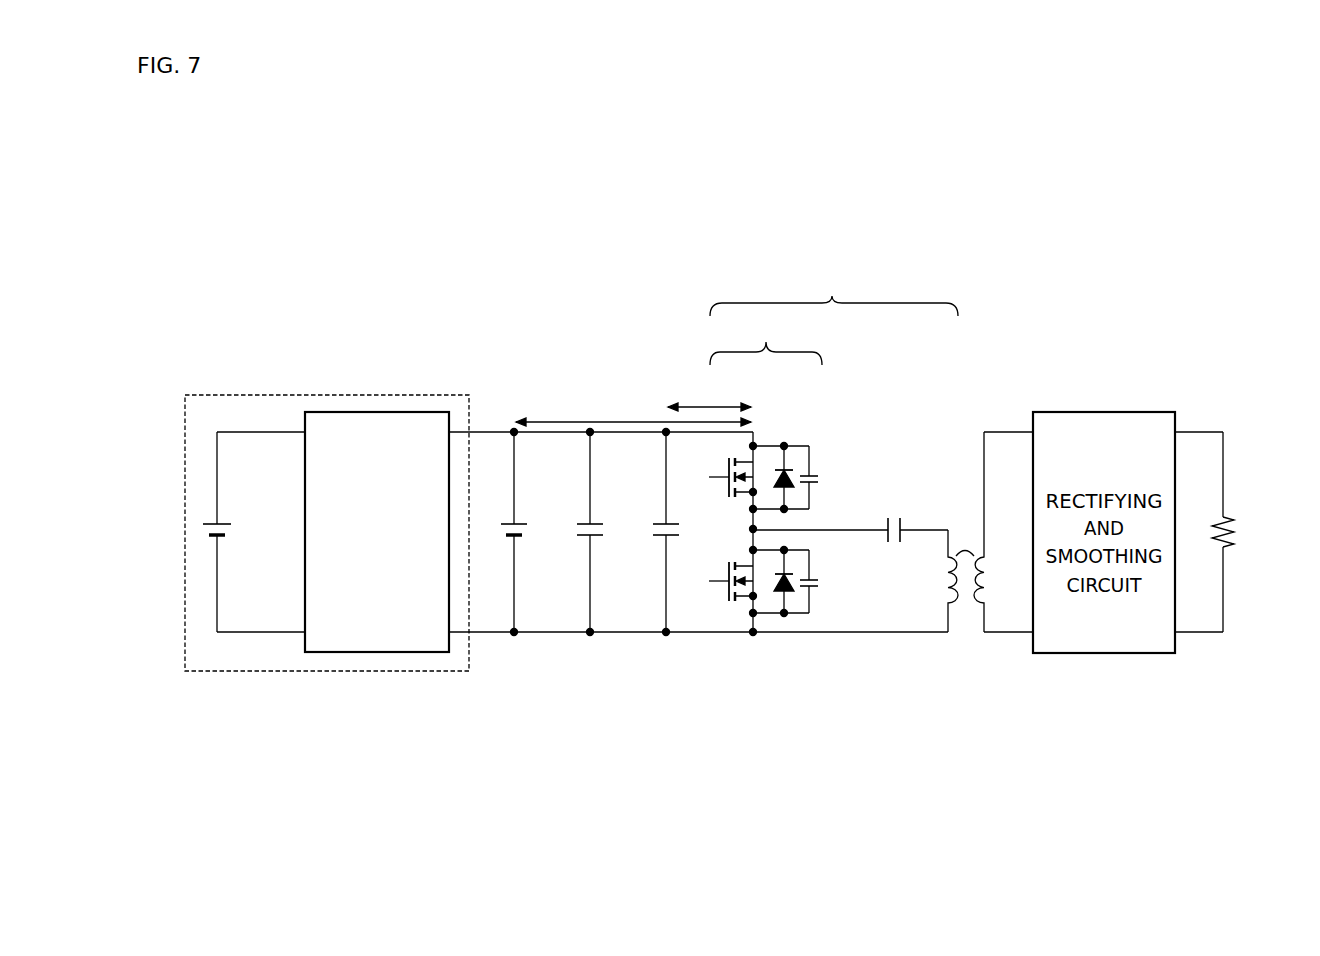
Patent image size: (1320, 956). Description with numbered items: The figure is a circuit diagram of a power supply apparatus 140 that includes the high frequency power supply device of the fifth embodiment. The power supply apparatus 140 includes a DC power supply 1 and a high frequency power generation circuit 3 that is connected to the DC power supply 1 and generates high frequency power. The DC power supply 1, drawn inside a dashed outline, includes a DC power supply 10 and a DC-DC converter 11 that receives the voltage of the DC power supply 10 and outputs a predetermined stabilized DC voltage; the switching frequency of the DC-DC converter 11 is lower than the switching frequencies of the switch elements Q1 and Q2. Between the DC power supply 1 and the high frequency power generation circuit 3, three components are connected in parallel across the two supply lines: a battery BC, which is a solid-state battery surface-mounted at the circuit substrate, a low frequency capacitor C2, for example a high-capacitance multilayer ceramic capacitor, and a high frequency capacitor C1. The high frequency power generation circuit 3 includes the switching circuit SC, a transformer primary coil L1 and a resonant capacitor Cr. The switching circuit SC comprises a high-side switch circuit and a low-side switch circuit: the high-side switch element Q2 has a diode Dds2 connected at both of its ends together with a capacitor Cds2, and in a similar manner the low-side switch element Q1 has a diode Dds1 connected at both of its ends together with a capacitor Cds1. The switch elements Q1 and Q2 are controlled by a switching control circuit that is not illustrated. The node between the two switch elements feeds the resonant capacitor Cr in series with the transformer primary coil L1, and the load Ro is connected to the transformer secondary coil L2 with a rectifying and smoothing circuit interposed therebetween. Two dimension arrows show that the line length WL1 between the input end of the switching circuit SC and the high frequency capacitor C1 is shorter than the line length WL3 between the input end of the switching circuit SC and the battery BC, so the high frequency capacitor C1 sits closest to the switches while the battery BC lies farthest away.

The power supply apparatus 140 is at (268, 285).
The DC power supply 1 is at (312, 395).
The DC power supply 10 is at (196, 523).
The DC-DC converter 11 is at (377, 412).
The high frequency power generation circuit 3 is at (832, 296).
The battery BC is at (495, 532).
The high frequency capacitor C1 is at (648, 532).
The low frequency capacitor C2 is at (572, 532).
The line length WL1 is at (709, 392).
The line length WL3 is at (633, 410).
The switching circuit SC is at (766, 338).
The low-side switch element Q1 is at (721, 574).
The high-side switch element Q2 is at (721, 470).
The diode Dds1 is at (770, 592).
The diode Dds2 is at (769, 477).
The capacitor Cds1 is at (843, 581).
The capacitor Cds2 is at (843, 477).
The resonant capacitor Cr is at (850, 521).
The transformer primary coil L1 is at (942, 581).
The transformer secondary coil L2 is at (996, 532).
The load Ro is at (1221, 532).